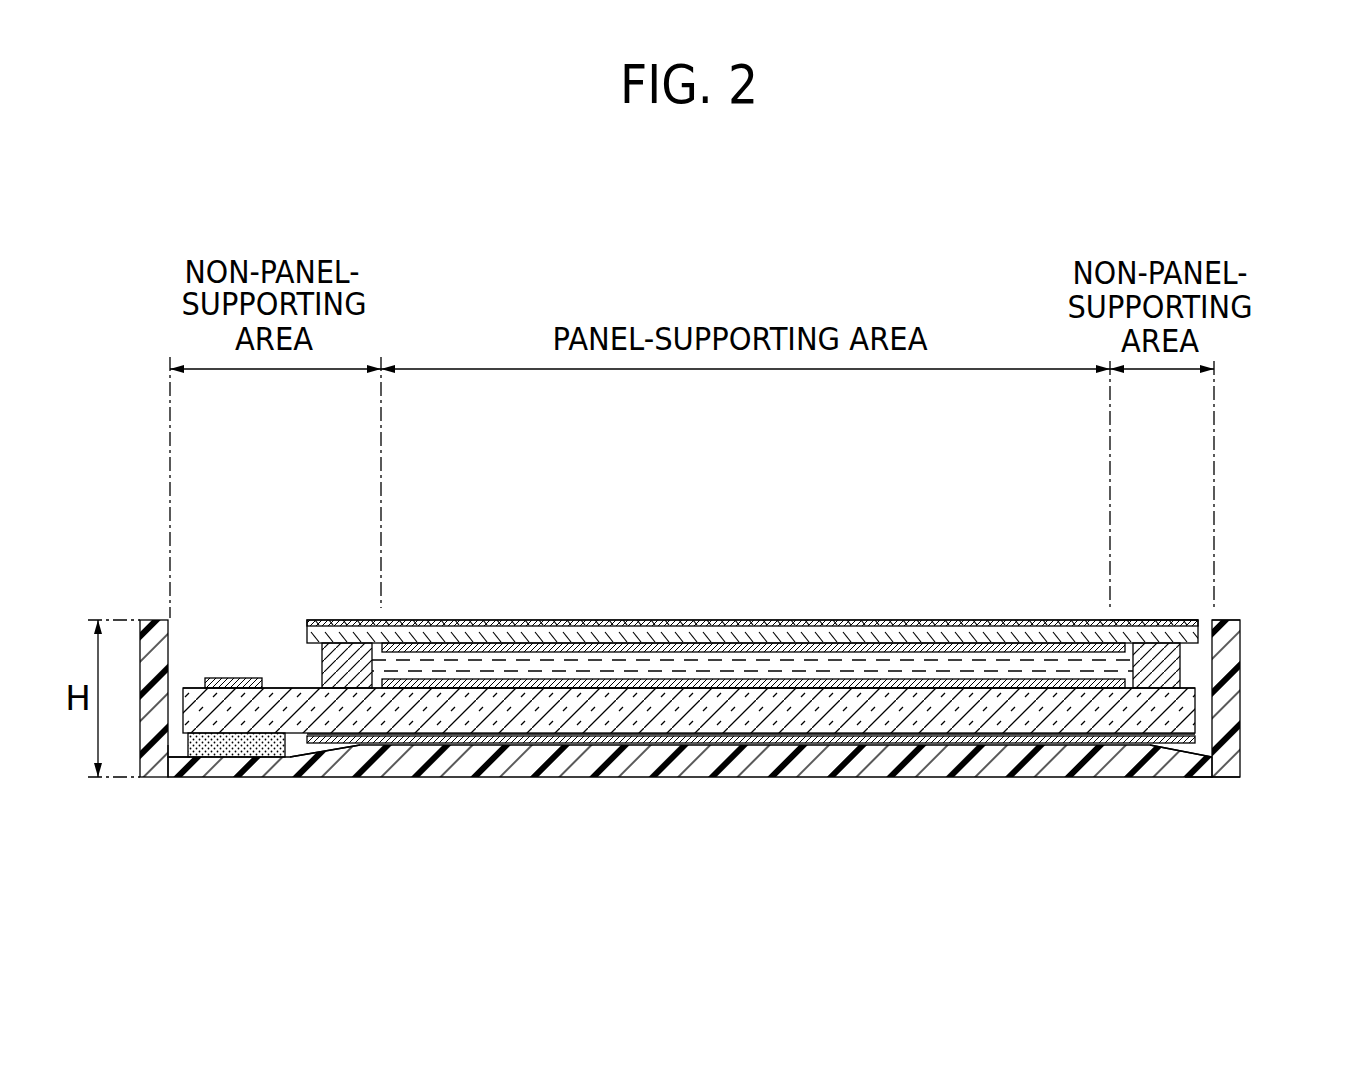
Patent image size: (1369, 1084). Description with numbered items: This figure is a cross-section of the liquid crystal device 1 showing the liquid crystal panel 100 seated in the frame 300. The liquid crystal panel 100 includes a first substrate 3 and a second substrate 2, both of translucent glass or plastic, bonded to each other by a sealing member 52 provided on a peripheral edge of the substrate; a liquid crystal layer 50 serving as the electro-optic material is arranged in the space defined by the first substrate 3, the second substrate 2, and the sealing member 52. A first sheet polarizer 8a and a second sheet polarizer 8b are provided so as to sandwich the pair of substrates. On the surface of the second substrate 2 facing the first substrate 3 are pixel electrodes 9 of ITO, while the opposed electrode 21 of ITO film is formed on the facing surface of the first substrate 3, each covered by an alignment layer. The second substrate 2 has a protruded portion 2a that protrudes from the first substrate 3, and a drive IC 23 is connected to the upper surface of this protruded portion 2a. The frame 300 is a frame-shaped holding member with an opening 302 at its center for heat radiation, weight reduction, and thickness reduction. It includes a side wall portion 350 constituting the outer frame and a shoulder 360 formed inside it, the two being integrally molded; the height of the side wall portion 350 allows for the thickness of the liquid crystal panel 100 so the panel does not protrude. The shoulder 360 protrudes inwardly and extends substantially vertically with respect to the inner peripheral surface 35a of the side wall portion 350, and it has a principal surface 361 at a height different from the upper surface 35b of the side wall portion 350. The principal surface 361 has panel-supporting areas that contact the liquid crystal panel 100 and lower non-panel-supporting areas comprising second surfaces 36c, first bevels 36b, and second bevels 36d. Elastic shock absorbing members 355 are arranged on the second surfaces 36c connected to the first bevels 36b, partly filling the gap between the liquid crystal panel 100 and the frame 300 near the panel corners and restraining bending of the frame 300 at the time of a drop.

The display device 1 is at (942, 272).
The second substrate 2 is at (1066, 718).
The protruded portion 2a is at (270, 700).
The first substrate 3 is at (986, 636).
The first sheet polarizer 8a is at (1130, 618).
The second sheet polarizer 8b is at (952, 746).
The pixel electrodes 9 is at (452, 682).
The opposed electrode 21 is at (710, 648).
The drive IC 23 is at (216, 680).
The liquid crystal layer 50 is at (570, 664).
The sealing member 52 is at (335, 670).
The liquid crystal panel 100 is at (876, 607).
The frame 300 is at (134, 606).
The opening 302 is at (1185, 785).
The side wall portion 350 is at (143, 705).
The shock absorbing members 355 is at (230, 754).
The shoulder 360 is at (603, 723).
The principal surface 361 is at (714, 732).
The inner peripheral surface 35a is at (1215, 694).
The upper surface 35b is at (1240, 621).
The first bevels 36b is at (306, 757).
The second surfaces 36c is at (172, 762).
The second bevels 36d is at (1162, 752).